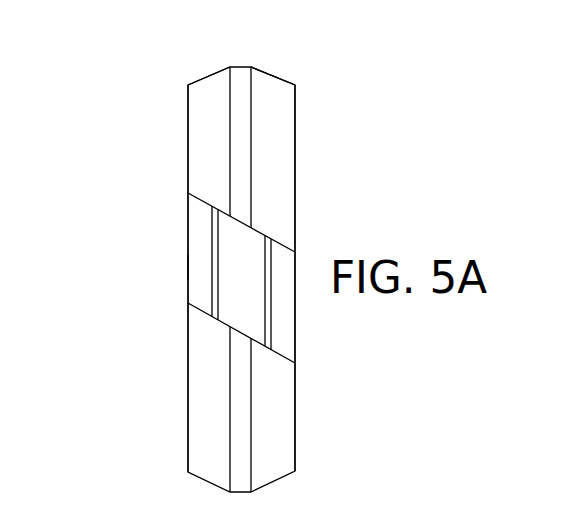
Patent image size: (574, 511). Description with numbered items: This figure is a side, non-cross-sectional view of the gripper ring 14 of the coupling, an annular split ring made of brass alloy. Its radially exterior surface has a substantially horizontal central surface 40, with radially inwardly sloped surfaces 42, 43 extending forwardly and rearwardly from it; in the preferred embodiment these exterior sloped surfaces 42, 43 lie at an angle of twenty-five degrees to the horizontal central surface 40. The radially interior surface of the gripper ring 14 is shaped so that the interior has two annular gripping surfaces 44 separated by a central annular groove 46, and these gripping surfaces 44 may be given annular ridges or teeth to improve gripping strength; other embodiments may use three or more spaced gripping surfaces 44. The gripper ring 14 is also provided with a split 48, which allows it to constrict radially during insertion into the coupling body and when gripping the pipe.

The gripper ring 14 is at (123, 58).
The horizontal central surface 40 is at (242, 65).
The radially inwardly sloped surface 42 is at (208, 75).
The radially inwardly sloped surface 43 is at (275, 73).
The annular gripping surface 44 is at (200, 212).
The central annular groove 46 is at (240, 297).
The split 48 is at (188, 268).